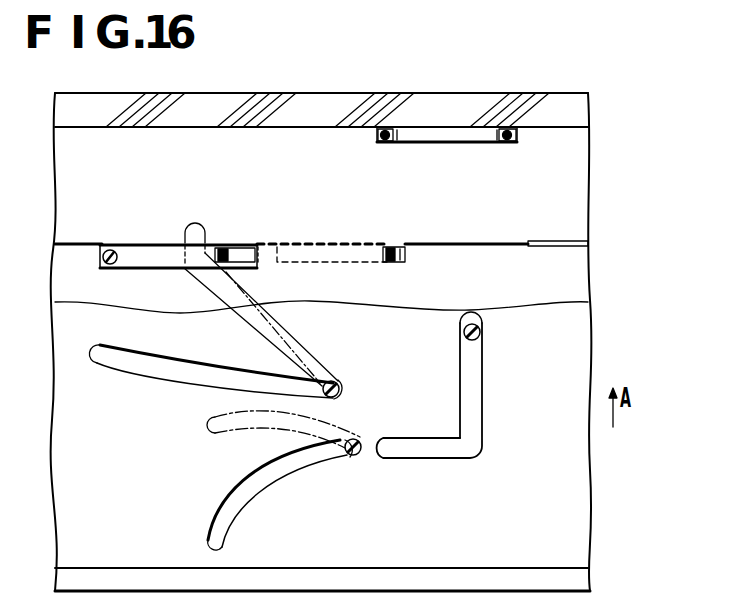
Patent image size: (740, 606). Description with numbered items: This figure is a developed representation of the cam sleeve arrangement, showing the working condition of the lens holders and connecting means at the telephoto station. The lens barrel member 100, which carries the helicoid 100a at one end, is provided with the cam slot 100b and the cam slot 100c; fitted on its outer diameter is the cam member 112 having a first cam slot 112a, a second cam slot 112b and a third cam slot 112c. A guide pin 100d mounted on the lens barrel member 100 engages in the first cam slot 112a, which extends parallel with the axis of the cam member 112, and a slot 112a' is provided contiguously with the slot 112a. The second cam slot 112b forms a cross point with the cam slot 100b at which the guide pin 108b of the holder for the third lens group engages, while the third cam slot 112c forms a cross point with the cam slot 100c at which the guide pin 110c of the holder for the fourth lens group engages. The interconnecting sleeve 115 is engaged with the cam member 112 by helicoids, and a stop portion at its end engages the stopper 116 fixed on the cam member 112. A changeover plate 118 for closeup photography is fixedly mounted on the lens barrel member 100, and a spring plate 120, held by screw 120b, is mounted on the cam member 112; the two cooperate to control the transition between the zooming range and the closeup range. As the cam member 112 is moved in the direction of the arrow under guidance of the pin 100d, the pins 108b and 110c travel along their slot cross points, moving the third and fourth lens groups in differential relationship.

The lens barrel member 100 is at (582, 192).
The helicoid 100a is at (540, 98).
The cam slot 100b is at (305, 358).
The cam slot 100c is at (216, 433).
The guide pin 100d is at (480, 335).
The guide pin 108b is at (342, 390).
The guide pin 110c is at (355, 458).
The cam member 112 is at (573, 518).
The first cam slot 112a is at (461, 385).
The slot 112a' is at (435, 472).
The second cam slot 112b is at (115, 365).
The third cam slot 112c is at (233, 517).
The interconnecting sleeve 115 is at (573, 287).
The stopper 116 is at (109, 247).
The changeover plate 118 is at (437, 143).
The spring plate 120 is at (305, 253).
The screw 120b is at (393, 247).